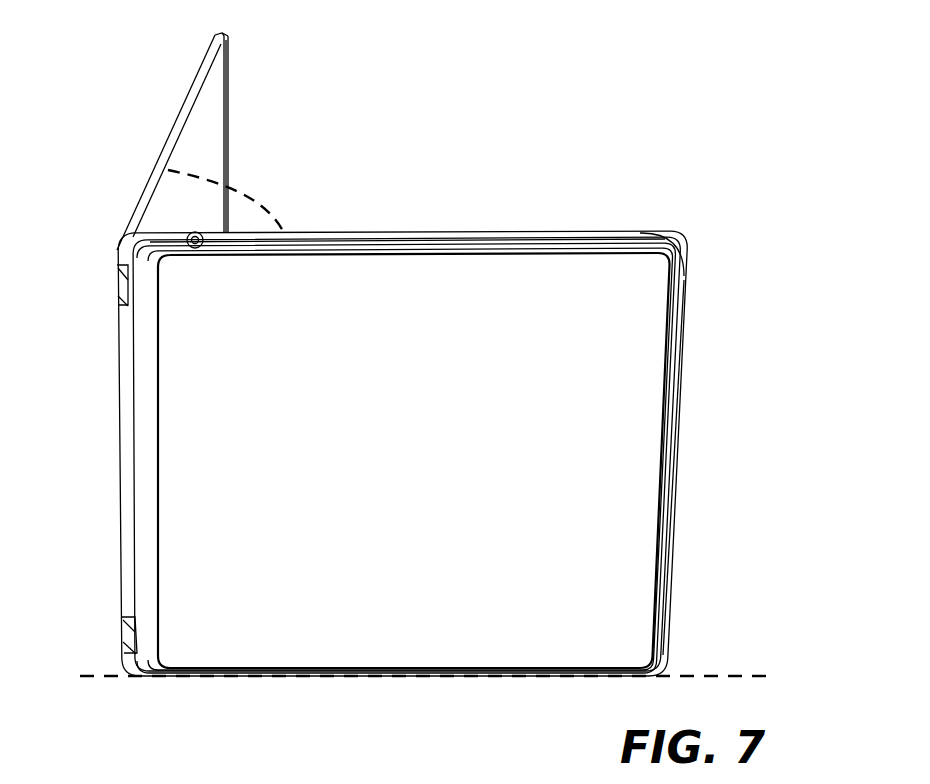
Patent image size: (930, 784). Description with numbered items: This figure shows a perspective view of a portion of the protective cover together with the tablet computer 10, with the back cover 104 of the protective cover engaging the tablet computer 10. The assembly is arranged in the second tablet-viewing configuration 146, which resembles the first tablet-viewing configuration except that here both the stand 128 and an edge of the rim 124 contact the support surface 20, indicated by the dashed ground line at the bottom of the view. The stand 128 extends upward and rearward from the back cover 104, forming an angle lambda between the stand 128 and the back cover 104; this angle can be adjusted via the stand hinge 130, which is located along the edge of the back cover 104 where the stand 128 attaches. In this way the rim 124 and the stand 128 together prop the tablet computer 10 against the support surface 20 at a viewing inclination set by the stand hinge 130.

The tablet computer 10 is at (414, 392).
The support surface 20 is at (766, 672).
The back cover 104 is at (577, 226).
The rim 124 is at (665, 390).
The stand 128 is at (208, 118).
The stand hinge 130 is at (123, 288).
The second tablet-viewing configuration 146 is at (678, 196).